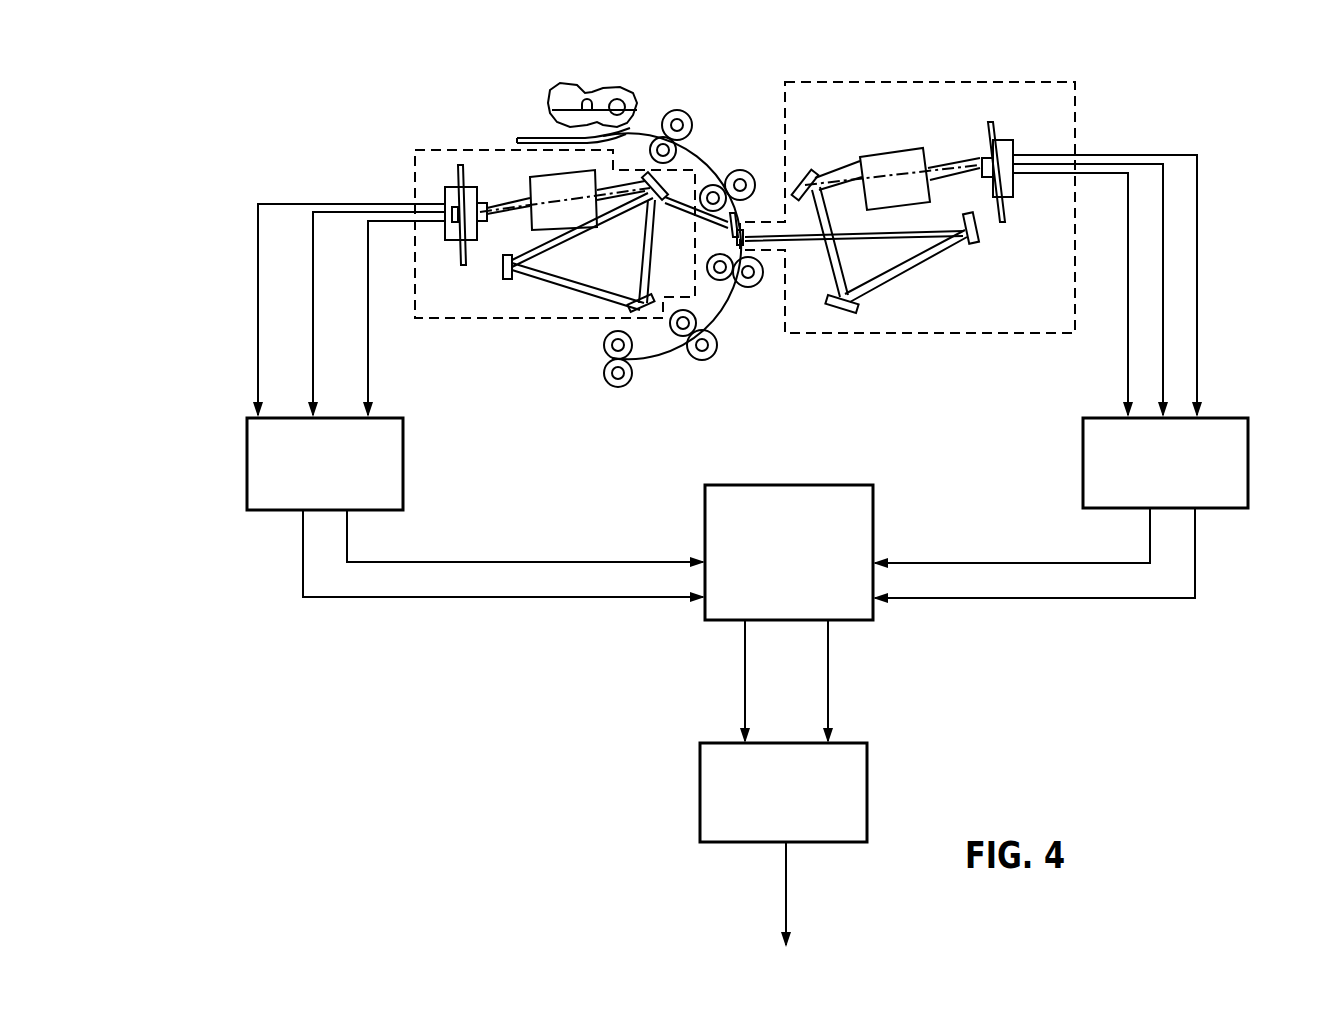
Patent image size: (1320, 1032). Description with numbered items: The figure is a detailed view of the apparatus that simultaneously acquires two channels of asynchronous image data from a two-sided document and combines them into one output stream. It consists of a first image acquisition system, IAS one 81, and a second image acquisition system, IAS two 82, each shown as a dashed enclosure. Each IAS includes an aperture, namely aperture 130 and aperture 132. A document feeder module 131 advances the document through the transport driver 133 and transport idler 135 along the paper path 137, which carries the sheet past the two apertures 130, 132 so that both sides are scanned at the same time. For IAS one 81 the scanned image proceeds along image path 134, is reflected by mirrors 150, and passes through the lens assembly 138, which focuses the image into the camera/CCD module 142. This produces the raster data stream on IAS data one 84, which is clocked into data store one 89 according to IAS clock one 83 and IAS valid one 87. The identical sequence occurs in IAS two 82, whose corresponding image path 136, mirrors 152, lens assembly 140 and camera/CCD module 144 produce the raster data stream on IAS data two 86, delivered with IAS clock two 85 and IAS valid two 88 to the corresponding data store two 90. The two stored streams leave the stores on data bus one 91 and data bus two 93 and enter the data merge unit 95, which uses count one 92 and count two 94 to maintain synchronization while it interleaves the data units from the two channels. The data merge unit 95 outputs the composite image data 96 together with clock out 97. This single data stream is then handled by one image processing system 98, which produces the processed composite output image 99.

The first image acquisition system 81 is at (471, 138).
The second image acquisition system 82 is at (1086, 104).
The IAS clock one 83 is at (258, 378).
The IAS data one 84 is at (313, 380).
The IAS clock two 85 is at (1128, 375).
The IAS data two 86 is at (1163, 373).
The IAS valid one 87 is at (368, 373).
The IAS valid two 88 is at (1197, 337).
The data store one 89 is at (405, 457).
The data store two 90 is at (1250, 448).
The data bus one 91 is at (430, 560).
The count one 92 is at (417, 598).
The data bus two 93 is at (1107, 562).
The count two 94 is at (1117, 600).
The data merge unit 95 is at (838, 484).
The composite image data 96 is at (745, 654).
The clock out 97 is at (827, 672).
The image processing system 98 is at (868, 770).
The composite output image 99 is at (787, 897).
The aperture 130 is at (810, 219).
The document feeder module 131 is at (630, 86).
The aperture 132 is at (762, 243).
The transport driver 133 is at (690, 112).
The image path 134 is at (538, 280).
The transport idler 135 is at (693, 150).
The optical path second station 136 is at (937, 250).
The paper path 137 is at (714, 163).
The lens assembly 138 is at (533, 223).
The lens second station 140 is at (890, 157).
The camera/CCD module 142 is at (444, 232).
The image sensor array two 144 is at (1018, 178).
The mirrors 150 is at (597, 193).
The mirrors second station 152 is at (806, 175).